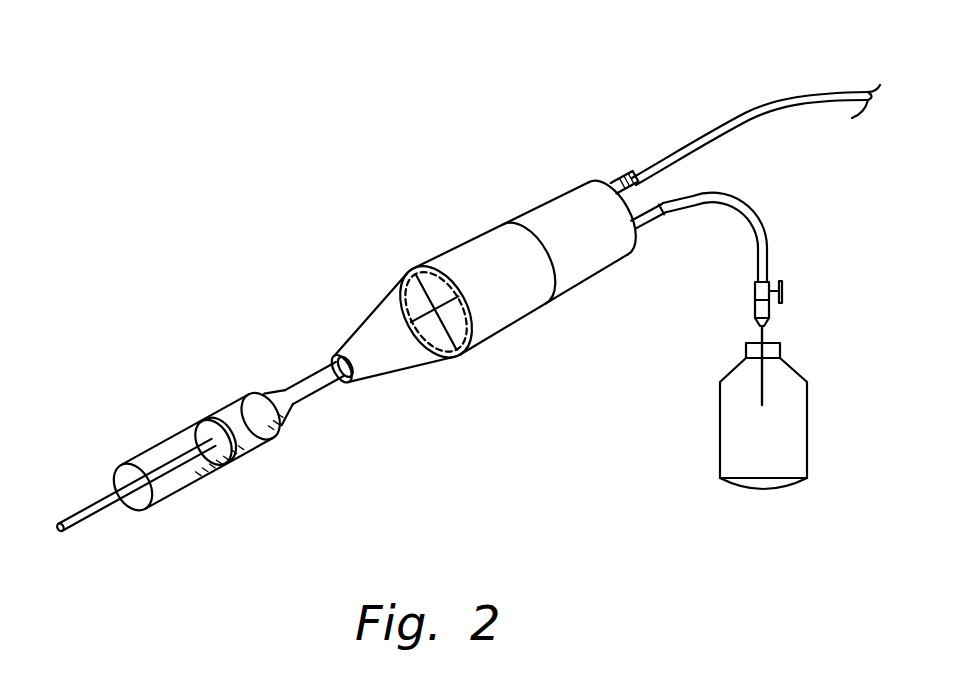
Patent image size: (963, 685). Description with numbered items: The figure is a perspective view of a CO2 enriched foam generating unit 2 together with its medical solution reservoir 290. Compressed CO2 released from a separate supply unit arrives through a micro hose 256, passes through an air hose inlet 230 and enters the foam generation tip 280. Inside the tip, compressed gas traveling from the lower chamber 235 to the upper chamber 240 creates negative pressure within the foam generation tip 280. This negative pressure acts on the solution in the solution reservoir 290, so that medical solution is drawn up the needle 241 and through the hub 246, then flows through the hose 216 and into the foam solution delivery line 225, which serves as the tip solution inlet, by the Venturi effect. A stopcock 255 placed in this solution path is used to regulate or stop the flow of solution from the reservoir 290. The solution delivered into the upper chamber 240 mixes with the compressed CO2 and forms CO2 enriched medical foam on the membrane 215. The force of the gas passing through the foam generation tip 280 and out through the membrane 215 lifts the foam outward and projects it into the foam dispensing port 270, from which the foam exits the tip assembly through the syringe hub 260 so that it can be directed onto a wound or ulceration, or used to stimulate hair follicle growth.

The CO2 enriched foam generating unit 2 is at (388, 148).
The syringe hub 260 is at (222, 402).
The foam dispensing port 270 is at (353, 323).
The foam generation tip 280 is at (457, 255).
The membrane 215 is at (436, 316).
The upper chamber 240 is at (513, 317).
The lower chamber 235 is at (590, 273).
The air hose inlet 230 is at (624, 177).
The micro hose 256 is at (733, 113).
The foam solution delivery line 225 is at (655, 224).
The hose 216 is at (763, 230).
The stopcock 255 is at (782, 285).
The hub 246 is at (770, 318).
The needle 241 is at (760, 392).
The solution reservoir 290 is at (807, 450).